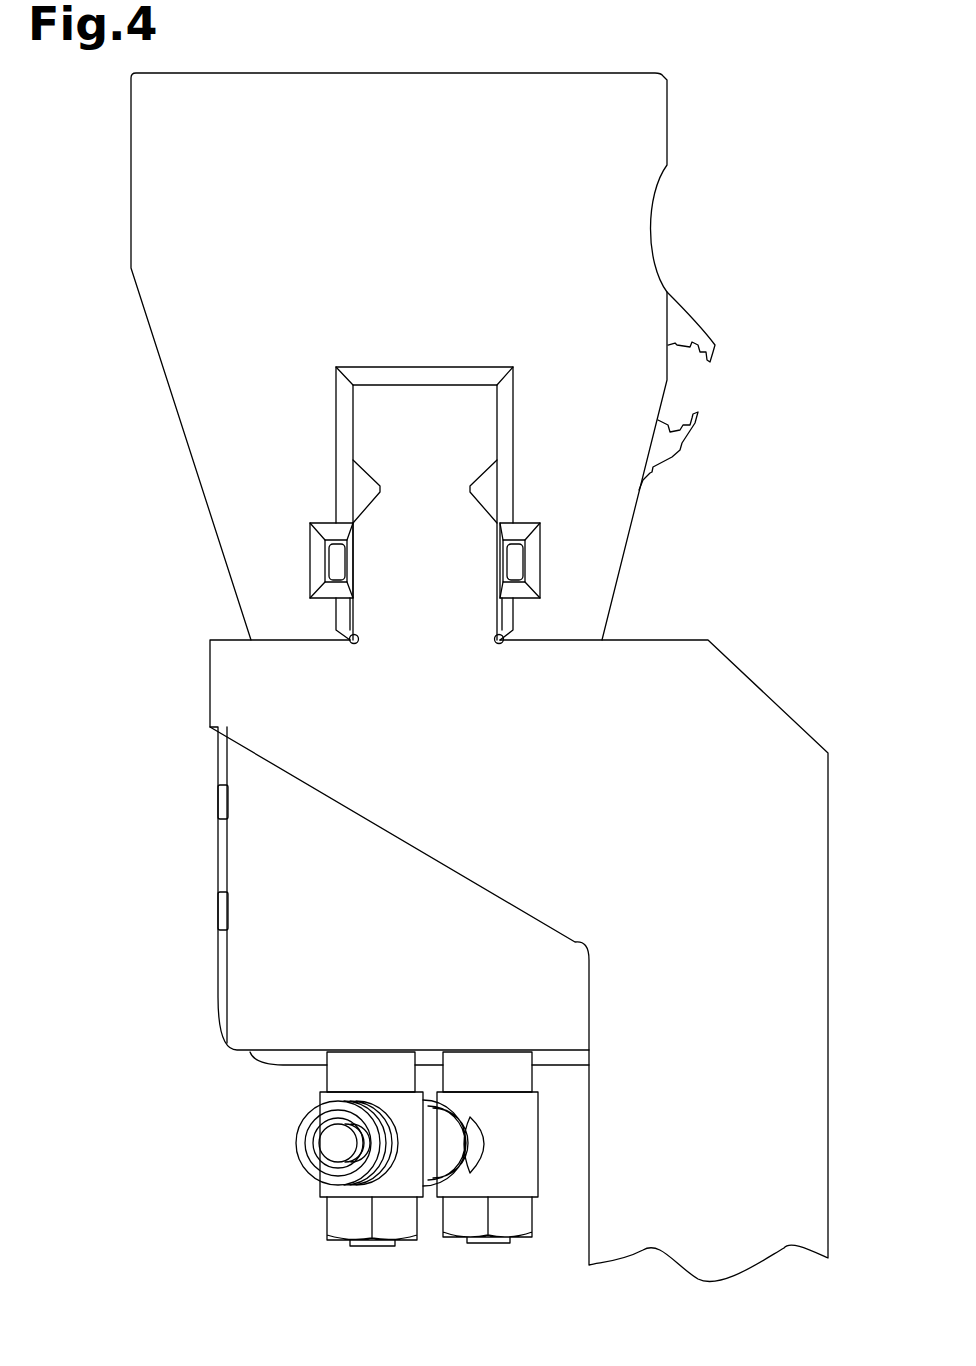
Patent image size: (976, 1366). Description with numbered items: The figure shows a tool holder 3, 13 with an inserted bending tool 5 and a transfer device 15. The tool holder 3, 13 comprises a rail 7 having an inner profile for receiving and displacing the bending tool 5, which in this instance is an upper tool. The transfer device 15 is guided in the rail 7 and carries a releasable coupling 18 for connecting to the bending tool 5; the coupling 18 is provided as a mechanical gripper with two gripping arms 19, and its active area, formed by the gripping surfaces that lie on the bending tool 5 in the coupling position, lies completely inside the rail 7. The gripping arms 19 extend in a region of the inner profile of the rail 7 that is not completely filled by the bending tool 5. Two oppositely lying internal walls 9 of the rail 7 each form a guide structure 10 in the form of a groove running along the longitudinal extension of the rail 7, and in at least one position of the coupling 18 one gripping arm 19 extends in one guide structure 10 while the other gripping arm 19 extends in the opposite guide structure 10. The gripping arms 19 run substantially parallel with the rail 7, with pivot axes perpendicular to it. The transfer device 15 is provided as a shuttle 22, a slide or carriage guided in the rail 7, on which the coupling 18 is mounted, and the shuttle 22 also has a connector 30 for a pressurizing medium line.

The tool holder 3 is at (667, 115).
The tool holder 13 is at (480, 356).
The bending tool 5 is at (445, 961).
The rail 7 is at (440, 499).
The internal wall 9 is at (362, 479).
The guide structure 10 is at (442, 543).
The transfer device 15 is at (145, 910).
The releasable coupling 18 is at (538, 541).
The gripping arm 19 is at (338, 567).
The shuttle 22 is at (227, 952).
The connector 30 is at (278, 1137).